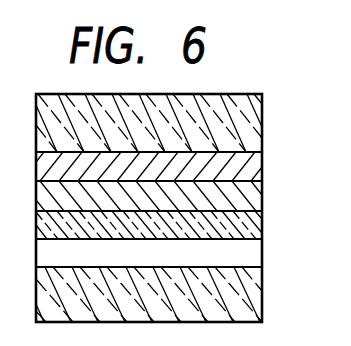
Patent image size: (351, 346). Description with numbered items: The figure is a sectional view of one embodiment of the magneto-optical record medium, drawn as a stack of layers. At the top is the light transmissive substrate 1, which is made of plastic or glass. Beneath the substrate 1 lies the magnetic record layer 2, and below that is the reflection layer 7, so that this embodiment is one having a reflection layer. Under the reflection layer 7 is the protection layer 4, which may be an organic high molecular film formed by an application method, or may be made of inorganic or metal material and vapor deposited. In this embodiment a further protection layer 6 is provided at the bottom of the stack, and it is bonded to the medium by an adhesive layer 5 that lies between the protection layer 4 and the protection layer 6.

The light transmissive substrate 1 is at (255, 130).
The magnetic record layer 2 is at (255, 171).
The reflection layer 7 is at (255, 199).
The protection layer 4 is at (255, 225).
The adhesive layer 5 is at (255, 253).
The protection layer 6 is at (255, 292).